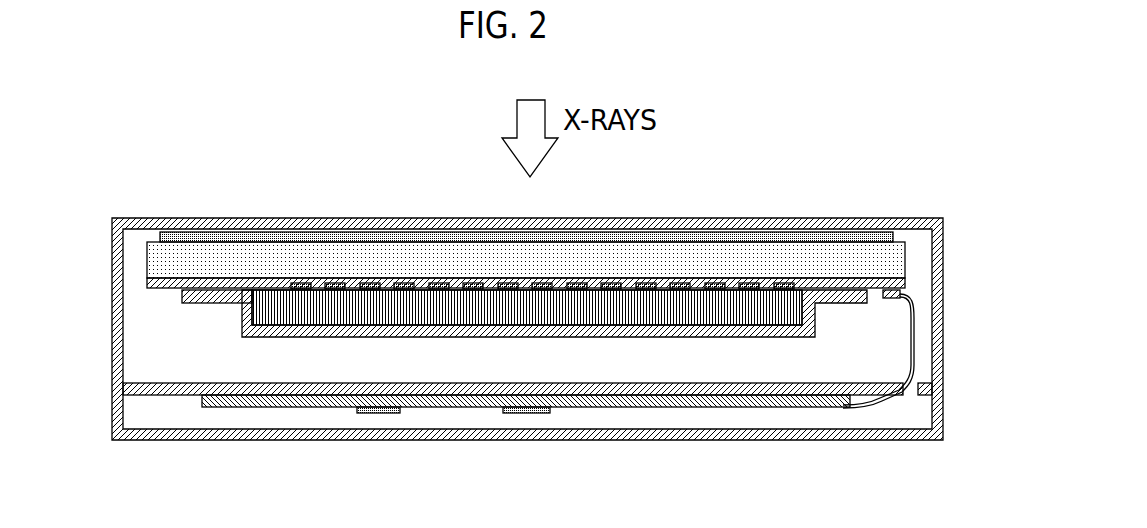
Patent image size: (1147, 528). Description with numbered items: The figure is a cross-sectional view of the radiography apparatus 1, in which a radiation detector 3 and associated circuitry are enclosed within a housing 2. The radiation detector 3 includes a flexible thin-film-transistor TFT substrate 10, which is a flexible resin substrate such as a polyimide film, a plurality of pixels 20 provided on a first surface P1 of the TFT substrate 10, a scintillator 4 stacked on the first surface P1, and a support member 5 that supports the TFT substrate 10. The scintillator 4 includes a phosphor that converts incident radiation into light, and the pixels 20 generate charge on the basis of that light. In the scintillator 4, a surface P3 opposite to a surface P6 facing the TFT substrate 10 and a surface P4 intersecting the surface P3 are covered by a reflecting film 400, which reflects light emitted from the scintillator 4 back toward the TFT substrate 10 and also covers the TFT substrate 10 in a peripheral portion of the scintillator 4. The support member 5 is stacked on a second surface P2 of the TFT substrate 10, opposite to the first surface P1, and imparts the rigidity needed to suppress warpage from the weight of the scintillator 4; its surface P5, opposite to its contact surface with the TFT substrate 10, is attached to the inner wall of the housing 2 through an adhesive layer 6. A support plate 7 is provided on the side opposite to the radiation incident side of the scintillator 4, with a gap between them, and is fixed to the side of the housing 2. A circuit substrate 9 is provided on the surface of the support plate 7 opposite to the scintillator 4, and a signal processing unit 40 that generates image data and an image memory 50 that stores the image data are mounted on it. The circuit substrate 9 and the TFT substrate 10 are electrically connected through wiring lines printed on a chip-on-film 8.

The radiography apparatus 1 is at (803, 194).
The housing 2 is at (861, 218).
The radiation detector 3 is at (301, 347).
The scintillator 4 is at (548, 320).
The support member 5 is at (905, 260).
The adhesive layer 6 is at (893, 238).
The support plate 7 is at (920, 388).
The chip-on-film 8 is at (913, 313).
The circuit substrate 9 is at (778, 400).
The TFT substrate 10 is at (905, 284).
The pixels 20 is at (367, 284).
The signal processing unit 40 is at (527, 413).
The image memory 50 is at (383, 413).
The reflecting film 400 is at (183, 292).
The first surface P1 is at (160, 290).
The second surface P2 is at (160, 278).
The surface P3 is at (478, 328).
The surface P4 is at (237, 301).
The surface P5 is at (163, 233).
The surface P6 is at (279, 288).